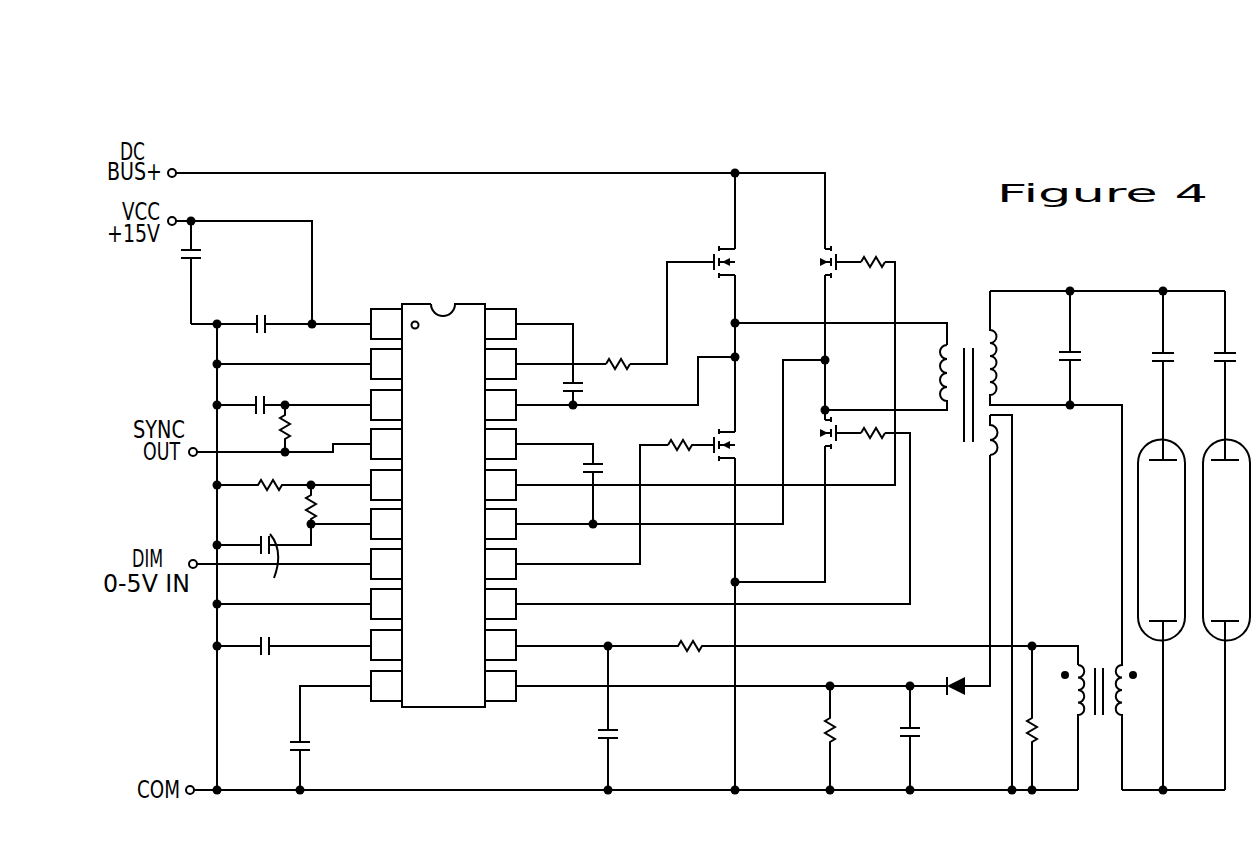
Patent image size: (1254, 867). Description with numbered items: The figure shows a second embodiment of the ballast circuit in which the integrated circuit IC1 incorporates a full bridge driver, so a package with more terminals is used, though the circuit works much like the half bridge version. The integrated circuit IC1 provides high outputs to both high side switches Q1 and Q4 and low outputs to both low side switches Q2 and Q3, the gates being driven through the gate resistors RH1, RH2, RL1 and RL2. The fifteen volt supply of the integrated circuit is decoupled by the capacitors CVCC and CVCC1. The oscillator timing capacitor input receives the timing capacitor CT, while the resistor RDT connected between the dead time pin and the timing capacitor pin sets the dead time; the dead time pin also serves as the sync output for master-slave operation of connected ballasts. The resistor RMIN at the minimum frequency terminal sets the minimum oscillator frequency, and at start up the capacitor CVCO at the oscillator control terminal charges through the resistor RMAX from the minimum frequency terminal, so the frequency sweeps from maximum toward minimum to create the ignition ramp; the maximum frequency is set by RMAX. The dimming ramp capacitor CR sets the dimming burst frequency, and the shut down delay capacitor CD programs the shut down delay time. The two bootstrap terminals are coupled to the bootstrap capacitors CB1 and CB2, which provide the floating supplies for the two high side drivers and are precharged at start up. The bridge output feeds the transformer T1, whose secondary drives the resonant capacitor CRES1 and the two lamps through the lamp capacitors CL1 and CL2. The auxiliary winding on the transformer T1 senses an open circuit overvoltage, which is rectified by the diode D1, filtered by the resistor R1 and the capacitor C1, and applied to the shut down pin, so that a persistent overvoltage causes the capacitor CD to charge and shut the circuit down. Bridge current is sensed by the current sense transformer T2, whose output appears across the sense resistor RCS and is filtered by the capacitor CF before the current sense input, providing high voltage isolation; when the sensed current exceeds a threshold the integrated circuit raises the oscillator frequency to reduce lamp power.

The integrated circuit IC1 is at (433, 488).
The VCC capacitor CVCC is at (221, 272).
The VCC capacitor CVCC1 is at (281, 307).
The oscillator timing capacitor CT is at (294, 388).
The dead time resistor RDT is at (306, 428).
The minimum frequency resistor RMIN is at (294, 474).
The maximum frequency resistor RMAX is at (309, 504).
The VCO capacitor CVCO is at (264, 564).
The dimming ramp capacitor CR is at (294, 629).
The shut down delay capacitor CD is at (313, 738).
The bootstrap capacitor CB1 is at (571, 364).
The high side gate resistor RH1 is at (616, 348).
The bootstrap capacitor CB2 is at (576, 479).
The low side gate resistor RL1 is at (796, 535).
The high side switch Q1 is at (740, 262).
The low side switch Q2 is at (740, 445).
The low side switch Q3 is at (827, 433).
The high side switch Q4 is at (826, 262).
The high side gate resistor RH2 is at (877, 244).
The low side gate resistor RL2 is at (873, 447).
The filter capacitor CF is at (625, 718).
The filter resistor R1 is at (846, 738).
The filter capacitor C1 is at (920, 738).
The diode D1 is at (967, 591).
The sense resistor RCS is at (1051, 718).
The current sense transformer T2 is at (1100, 597).
The transformer T1 is at (1031, 540).
The resonant capacitor CRES1 is at (1041, 348).
The lamp capacitor CL1 is at (1148, 375).
The lamp capacitor CL2 is at (1211, 375).